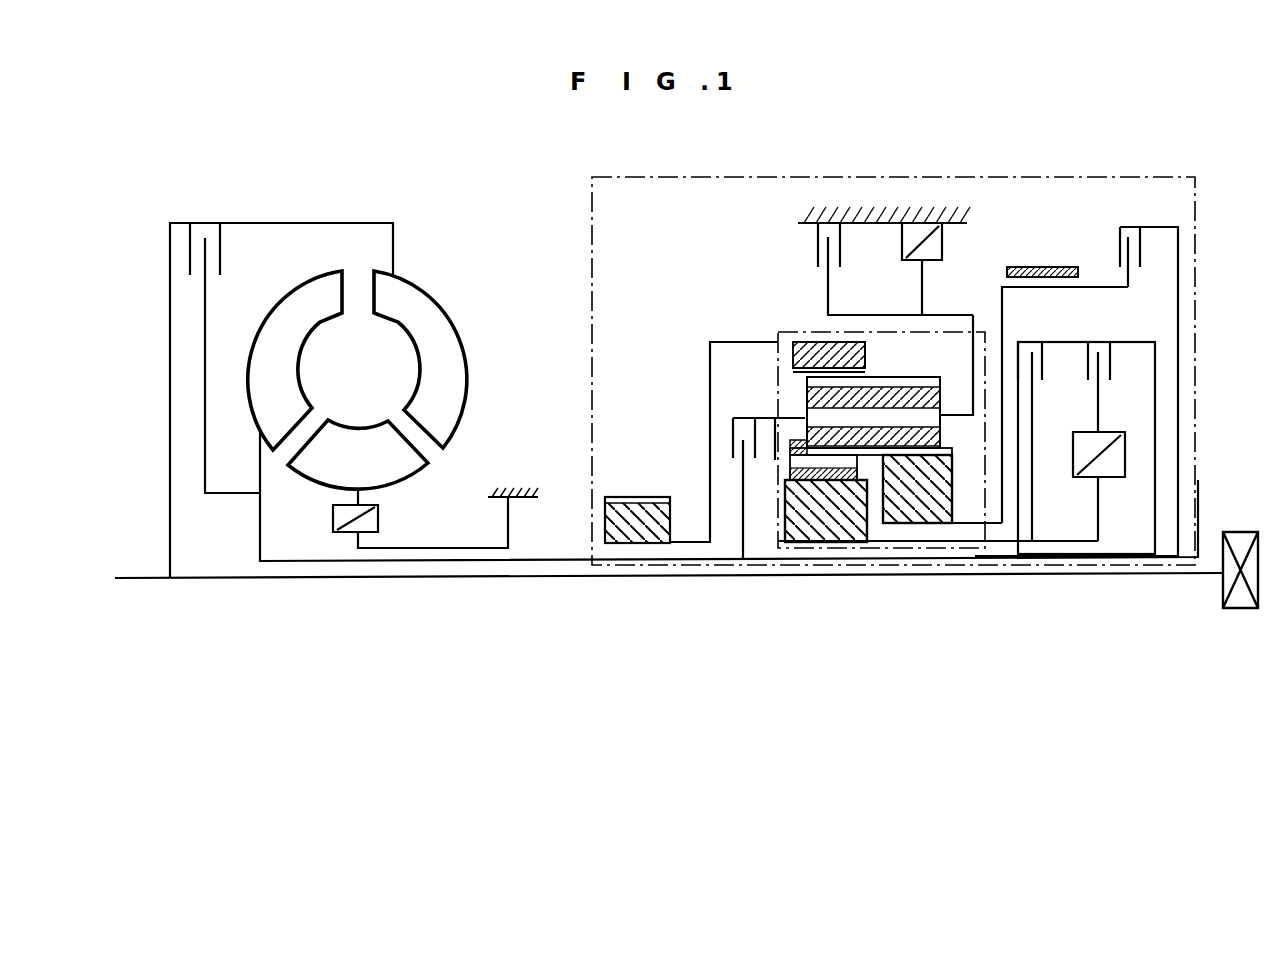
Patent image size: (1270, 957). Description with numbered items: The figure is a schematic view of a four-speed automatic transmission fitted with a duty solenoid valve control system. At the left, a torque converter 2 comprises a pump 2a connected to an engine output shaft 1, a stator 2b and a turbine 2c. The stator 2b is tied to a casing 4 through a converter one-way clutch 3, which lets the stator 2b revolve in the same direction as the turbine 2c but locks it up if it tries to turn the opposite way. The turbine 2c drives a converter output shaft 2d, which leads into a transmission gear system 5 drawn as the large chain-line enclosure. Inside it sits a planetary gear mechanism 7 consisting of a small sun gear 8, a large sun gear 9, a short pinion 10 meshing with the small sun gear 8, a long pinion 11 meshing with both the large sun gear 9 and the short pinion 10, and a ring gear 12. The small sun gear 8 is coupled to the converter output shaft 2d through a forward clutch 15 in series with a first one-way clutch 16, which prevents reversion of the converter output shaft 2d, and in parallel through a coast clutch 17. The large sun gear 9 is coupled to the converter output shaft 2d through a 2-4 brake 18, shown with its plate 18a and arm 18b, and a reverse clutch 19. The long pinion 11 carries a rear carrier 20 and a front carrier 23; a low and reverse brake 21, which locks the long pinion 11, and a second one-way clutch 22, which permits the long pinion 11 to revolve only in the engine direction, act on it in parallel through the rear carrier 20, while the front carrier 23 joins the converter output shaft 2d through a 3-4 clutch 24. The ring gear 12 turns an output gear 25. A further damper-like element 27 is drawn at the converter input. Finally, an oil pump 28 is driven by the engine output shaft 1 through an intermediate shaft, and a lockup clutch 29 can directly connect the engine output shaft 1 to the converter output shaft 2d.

The engine output shaft 1 is at (150, 583).
The torque converter 2 is at (382, 375).
The pump 2a is at (447, 340).
The stator 2b is at (398, 470).
The turbine 2c is at (293, 308).
The converter output shaft 2d is at (540, 560).
The converter one-way clutch 3 is at (333, 518).
The casing 4 is at (512, 493).
The transmission gear system 5 is at (975, 170).
The planetary gear mechanism 7 is at (815, 325).
The small sun gear 8 is at (812, 545).
The large sun gear 9 is at (918, 525).
The short pinion 10 is at (790, 476).
The long pinion 11 is at (912, 390).
The ring gear 12 is at (805, 345).
The forward clutch 15 is at (1112, 358).
The first one-way clutch 16 is at (1088, 480).
The coast clutch 17 is at (1040, 358).
The 2-4 brake 18 is at (1034, 258).
The sensor plate 18a is at (1078, 266).
The sensor arm 18b is at (1128, 280).
The reverse clutch 19 is at (1128, 238).
The rear carrier 20 is at (938, 316).
The low and reverse brake 21 is at (843, 248).
The second one-way clutch 22 is at (944, 246).
The front carrier 23 is at (795, 412).
The 3-4 clutch 24 is at (735, 452).
The output gear 25 is at (638, 545).
The damper 27 is at (215, 212).
The oil pump 28 is at (1218, 600).
The lockup clutch 29 is at (1040, 575).